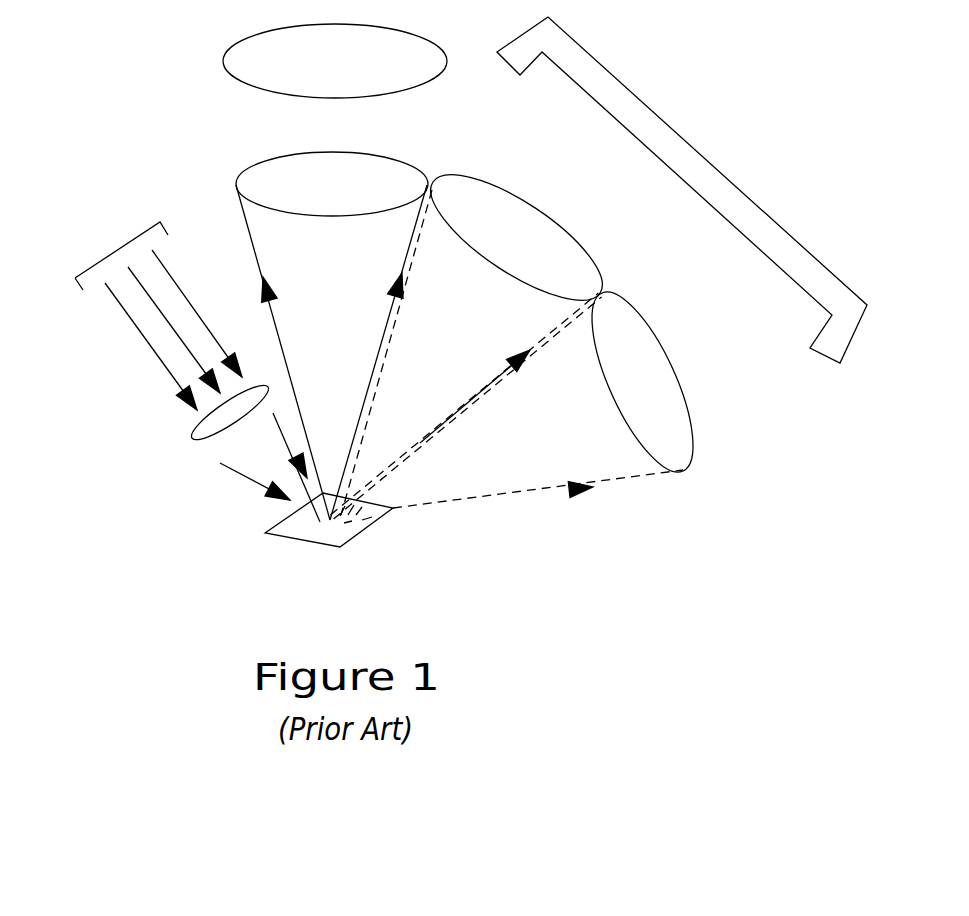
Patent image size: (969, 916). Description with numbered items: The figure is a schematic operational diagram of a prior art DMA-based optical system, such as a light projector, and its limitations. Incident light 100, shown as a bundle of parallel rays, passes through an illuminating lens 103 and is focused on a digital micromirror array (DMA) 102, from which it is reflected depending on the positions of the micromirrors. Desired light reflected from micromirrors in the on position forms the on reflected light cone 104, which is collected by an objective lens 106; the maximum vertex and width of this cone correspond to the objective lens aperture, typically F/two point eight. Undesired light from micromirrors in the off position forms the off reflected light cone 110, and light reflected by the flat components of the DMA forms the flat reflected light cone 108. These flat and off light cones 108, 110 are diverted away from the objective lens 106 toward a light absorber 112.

The incident light 100 is at (117, 250).
The digital micromirror array (DMA) 102 is at (338, 545).
The illuminating lens 103 is at (207, 432).
The "on" reflected light cone 104 is at (310, 182).
The objective lens 106 is at (257, 60).
The "flat" reflected light cone 108 is at (527, 240).
The "off" reflected light cone 110 is at (643, 395).
The light absorber 112 is at (678, 157).